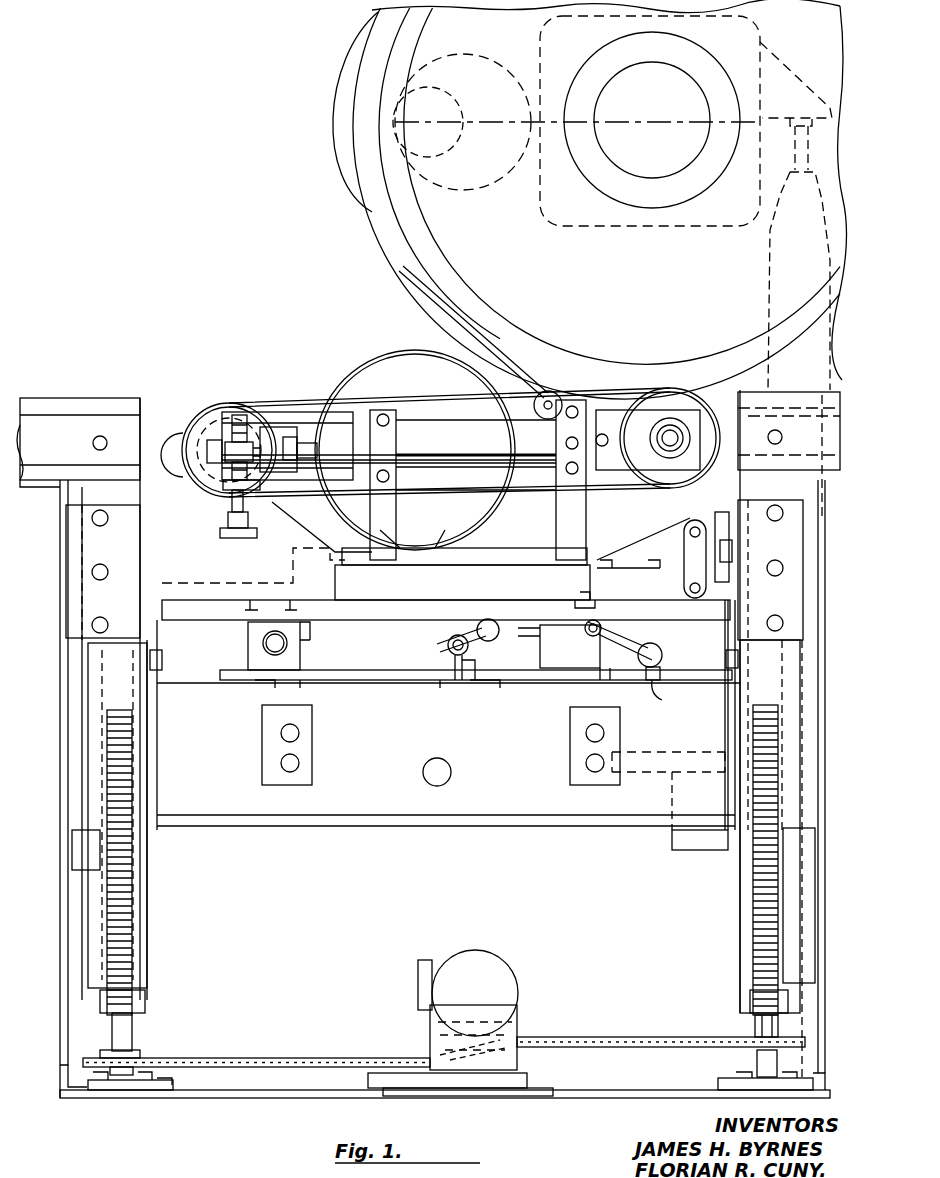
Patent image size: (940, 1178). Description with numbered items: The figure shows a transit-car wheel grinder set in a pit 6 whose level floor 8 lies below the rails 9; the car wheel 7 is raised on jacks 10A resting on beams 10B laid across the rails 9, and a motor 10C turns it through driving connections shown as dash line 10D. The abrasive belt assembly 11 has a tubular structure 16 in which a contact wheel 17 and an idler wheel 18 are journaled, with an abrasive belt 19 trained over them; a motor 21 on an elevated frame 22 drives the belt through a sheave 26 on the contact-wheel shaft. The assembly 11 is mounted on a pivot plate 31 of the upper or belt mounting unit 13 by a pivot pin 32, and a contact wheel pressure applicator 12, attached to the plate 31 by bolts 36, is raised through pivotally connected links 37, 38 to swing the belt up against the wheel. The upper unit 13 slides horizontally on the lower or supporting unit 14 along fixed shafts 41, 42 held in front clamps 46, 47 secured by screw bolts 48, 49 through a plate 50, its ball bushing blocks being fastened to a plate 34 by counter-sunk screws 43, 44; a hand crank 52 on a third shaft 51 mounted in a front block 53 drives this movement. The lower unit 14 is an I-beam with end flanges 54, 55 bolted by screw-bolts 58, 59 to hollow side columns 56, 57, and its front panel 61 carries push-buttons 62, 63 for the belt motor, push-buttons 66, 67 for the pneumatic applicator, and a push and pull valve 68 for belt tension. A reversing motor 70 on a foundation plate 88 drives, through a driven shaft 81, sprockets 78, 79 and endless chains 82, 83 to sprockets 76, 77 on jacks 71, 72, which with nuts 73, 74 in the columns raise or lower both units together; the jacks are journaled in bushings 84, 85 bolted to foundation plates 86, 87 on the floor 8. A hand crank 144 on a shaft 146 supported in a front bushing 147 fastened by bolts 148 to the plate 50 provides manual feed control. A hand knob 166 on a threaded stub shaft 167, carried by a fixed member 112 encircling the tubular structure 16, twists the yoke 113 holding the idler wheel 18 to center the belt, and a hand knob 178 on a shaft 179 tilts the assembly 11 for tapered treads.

The pit 6 is at (332, 926).
The car wheel 7 is at (405, 185).
The floor 8 is at (285, 1092).
The rails 9 is at (115, 398).
The jacks 10A is at (800, 258).
The beams 10B is at (815, 495).
The motors 10C is at (478, 32).
The driving connections 10D is at (478, 128).
The abrasive belt assembly 11 is at (610, 490).
The contact wheel pressure applicator 12 is at (672, 528).
The upper or belt mounting unit 13 is at (360, 622).
The lower or supporting unit 14 is at (405, 822).
The tubular structure 16 is at (528, 468).
The contact wheel 17 is at (675, 488).
The idler wheel 18 is at (200, 428).
The abrasive belt 19 is at (280, 398).
The motor 21 is at (368, 365).
The elevated frame 22 is at (470, 545).
The sheave 26 is at (515, 600).
The pivot plate 31 is at (512, 575).
The pivot pin 32 is at (180, 440).
The plate 34 is at (312, 622).
The bolts 36 is at (610, 566).
The link 37 is at (690, 556).
The link 38 is at (700, 568).
The shaft 41 is at (290, 648).
The shaft 42 is at (500, 630).
The counter-sunk metal screws 43 is at (255, 583).
The counter-sunk metal screws 44 is at (600, 600).
The front shaft clamp 46 is at (250, 654).
The front shaft clamp 47 is at (545, 655).
The screw bolt 48 is at (280, 685).
The screw bolt 49 is at (480, 684).
The plate 50 is at (350, 672).
The third transversely extending shaft 51 is at (460, 664).
The hand crank 52 is at (462, 684).
The front block 53 is at (445, 660).
The end flange 54 is at (150, 780).
The end flange 55 is at (726, 728).
The side supporting hollow column 56 is at (150, 905).
The side supporting hollow column 57 is at (738, 908).
The screw-bolt 58 is at (160, 660).
The screw-bolt 59 is at (725, 658).
The front panel 61 is at (522, 802).
The push-button 62 is at (300, 733).
The push-button 63 is at (300, 765).
The push-button 66 is at (585, 735).
The push-button 67 is at (585, 765).
The push and pull valve 68 is at (450, 764).
The reversing motor 70 is at (495, 966).
The jack 71 is at (140, 952).
The jack 72 is at (755, 958).
The nut 73 is at (145, 998).
The nut 74 is at (752, 1005).
The sprocket wheel 76 is at (97, 1050).
The sprocket wheel 77 is at (778, 1047).
The driven sprocket wheel 78 is at (517, 1055).
The driven sprocket wheel 79 is at (520, 1036).
The driven shaft 81 is at (512, 1020).
The endless chain 82 is at (260, 1057).
The endless chain 83 is at (580, 1038).
The bushing 84 is at (142, 1052).
The bushing 85 is at (757, 1062).
The foundation plate 86 is at (173, 1082).
The foundation plate 87 is at (717, 1086).
The foundation plate 88 is at (545, 1088).
The fixed member 112 is at (278, 404).
The yoke 113 is at (275, 468).
The hand crank 144 is at (660, 680).
The rotatable shaft 146 is at (605, 684).
The front bushing 147 is at (610, 626).
The bolts 148 is at (658, 702).
The hand knob 166 is at (235, 540).
The stub shaft 167 is at (230, 512).
The hand knob 178 is at (520, 393).
The shaft 179 is at (550, 392).